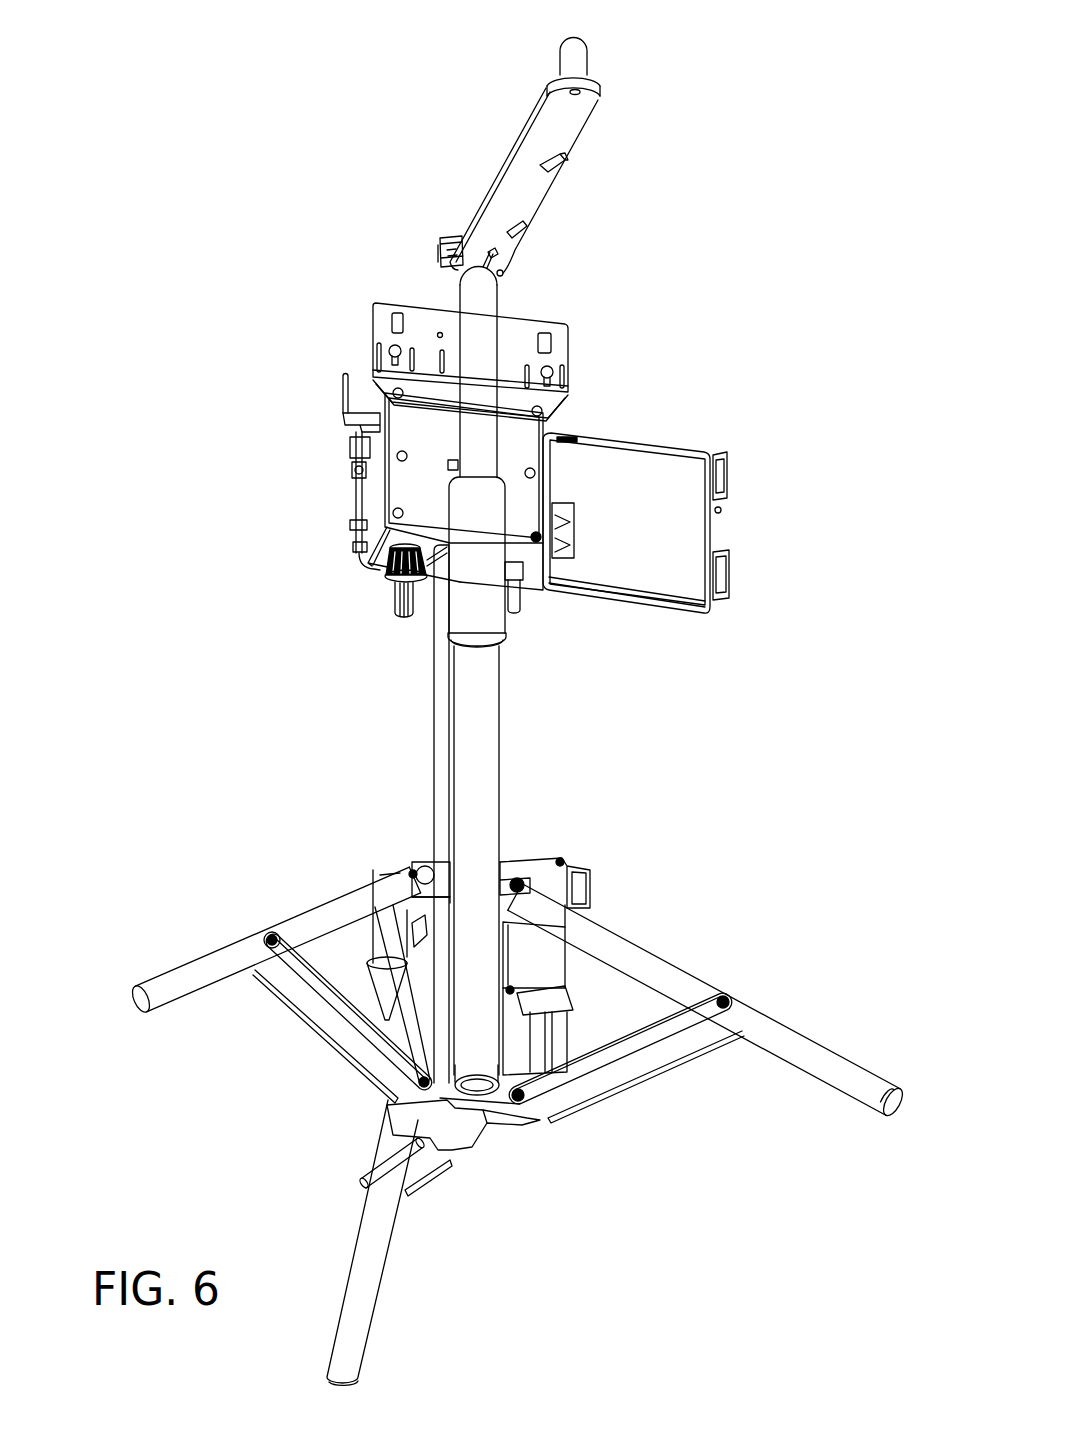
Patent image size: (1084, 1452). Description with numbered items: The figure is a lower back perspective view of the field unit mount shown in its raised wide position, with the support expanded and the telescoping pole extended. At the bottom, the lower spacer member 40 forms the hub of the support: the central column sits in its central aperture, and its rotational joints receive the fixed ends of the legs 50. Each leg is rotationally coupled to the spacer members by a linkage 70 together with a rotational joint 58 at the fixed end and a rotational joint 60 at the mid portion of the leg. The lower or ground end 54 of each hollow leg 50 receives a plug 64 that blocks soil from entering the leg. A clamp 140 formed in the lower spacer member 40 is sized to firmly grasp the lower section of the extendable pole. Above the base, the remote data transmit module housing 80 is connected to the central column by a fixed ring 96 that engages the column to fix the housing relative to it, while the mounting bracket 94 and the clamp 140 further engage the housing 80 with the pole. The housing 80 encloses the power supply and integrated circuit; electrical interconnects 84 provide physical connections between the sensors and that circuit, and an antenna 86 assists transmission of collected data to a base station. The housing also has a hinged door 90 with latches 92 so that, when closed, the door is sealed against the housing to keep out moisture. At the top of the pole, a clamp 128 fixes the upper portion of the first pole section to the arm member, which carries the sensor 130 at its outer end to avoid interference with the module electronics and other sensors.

The sensor 130 is at (583, 58).
The clamp 128 is at (447, 238).
The mounting bracket 94 is at (372, 313).
The antenna 86 is at (345, 397).
The housing 80 is at (402, 482).
The hinged door 90 is at (633, 462).
The latches 92 is at (733, 475).
The electrical interconnects 84 is at (395, 595).
The fixed ring 96 is at (440, 607).
The clamp 140 is at (502, 865).
The rotational joint 58 is at (560, 862).
The lower spacer member 40 is at (470, 1125).
The ground end 54 is at (140, 1010).
The rotational joint 60 is at (272, 940).
The linkage 70 is at (326, 1031).
The legs 50 is at (802, 1043).
The plug 64 is at (895, 1103).